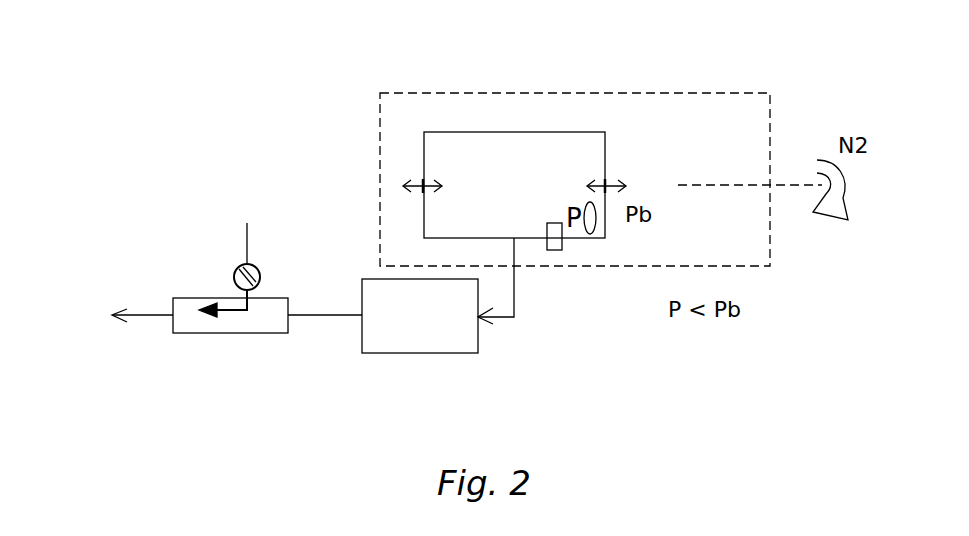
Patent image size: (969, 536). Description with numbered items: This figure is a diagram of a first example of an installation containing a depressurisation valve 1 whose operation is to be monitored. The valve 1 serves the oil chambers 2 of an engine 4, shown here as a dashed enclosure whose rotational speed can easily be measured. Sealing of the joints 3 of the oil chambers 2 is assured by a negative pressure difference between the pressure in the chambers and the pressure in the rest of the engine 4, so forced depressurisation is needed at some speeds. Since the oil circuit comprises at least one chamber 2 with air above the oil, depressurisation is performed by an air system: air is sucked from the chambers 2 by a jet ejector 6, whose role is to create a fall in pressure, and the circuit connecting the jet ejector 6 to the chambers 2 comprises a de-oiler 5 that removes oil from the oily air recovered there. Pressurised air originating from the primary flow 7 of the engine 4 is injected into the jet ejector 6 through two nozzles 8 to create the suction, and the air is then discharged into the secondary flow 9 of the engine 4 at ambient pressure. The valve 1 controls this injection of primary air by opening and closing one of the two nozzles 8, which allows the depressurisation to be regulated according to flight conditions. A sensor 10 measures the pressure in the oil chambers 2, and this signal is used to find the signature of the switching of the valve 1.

The depressurisation valve 1 is at (237, 270).
The oil chambers 2 is at (456, 145).
The joints 3 is at (425, 177).
The engine 4 is at (733, 120).
The de-oiler 5 is at (445, 328).
The jet ejector 6 is at (257, 335).
The primary flow 7 is at (247, 210).
The nozzles 8 is at (223, 315).
The secondary flow 9 is at (93, 312).
The sensor 10 is at (550, 237).